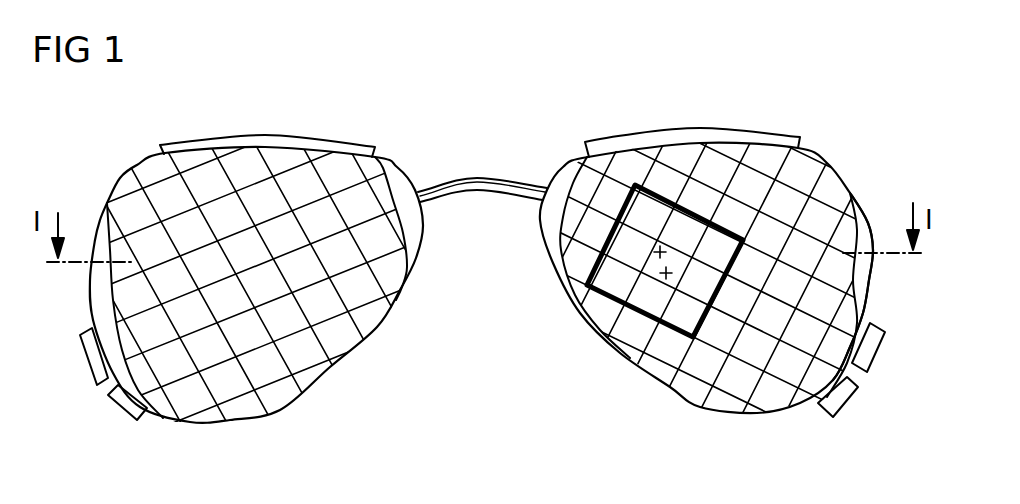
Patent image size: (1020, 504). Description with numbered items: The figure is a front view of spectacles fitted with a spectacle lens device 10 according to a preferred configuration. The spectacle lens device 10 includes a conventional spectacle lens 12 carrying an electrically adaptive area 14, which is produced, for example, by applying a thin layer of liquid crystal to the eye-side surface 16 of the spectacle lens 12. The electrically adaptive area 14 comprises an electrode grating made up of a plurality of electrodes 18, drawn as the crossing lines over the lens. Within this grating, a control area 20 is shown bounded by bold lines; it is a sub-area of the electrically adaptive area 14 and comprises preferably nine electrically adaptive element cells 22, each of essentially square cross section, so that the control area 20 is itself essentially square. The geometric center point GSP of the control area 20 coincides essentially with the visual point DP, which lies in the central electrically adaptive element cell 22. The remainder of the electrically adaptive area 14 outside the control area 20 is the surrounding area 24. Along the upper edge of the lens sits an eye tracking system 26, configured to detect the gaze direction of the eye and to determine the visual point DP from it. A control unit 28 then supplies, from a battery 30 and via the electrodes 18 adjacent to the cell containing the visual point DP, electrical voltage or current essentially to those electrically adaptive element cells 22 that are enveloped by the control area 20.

The spectacle lens device 10 is at (350, 117).
The spectacle lens 12 is at (852, 195).
The electrically adaptive area 14 is at (860, 230).
The eye-side surface 16 is at (866, 294).
The electrodes 18 is at (816, 180).
The control area 20 is at (665, 276).
The electrically adaptive element cells 22 is at (770, 400).
The surrounding area 24 is at (753, 180).
The eye tracking system 26 is at (243, 140).
The control unit 28 is at (122, 403).
The battery 30 is at (91, 360).
The visual point DP is at (658, 252).
The geometric center point GSP is at (683, 313).